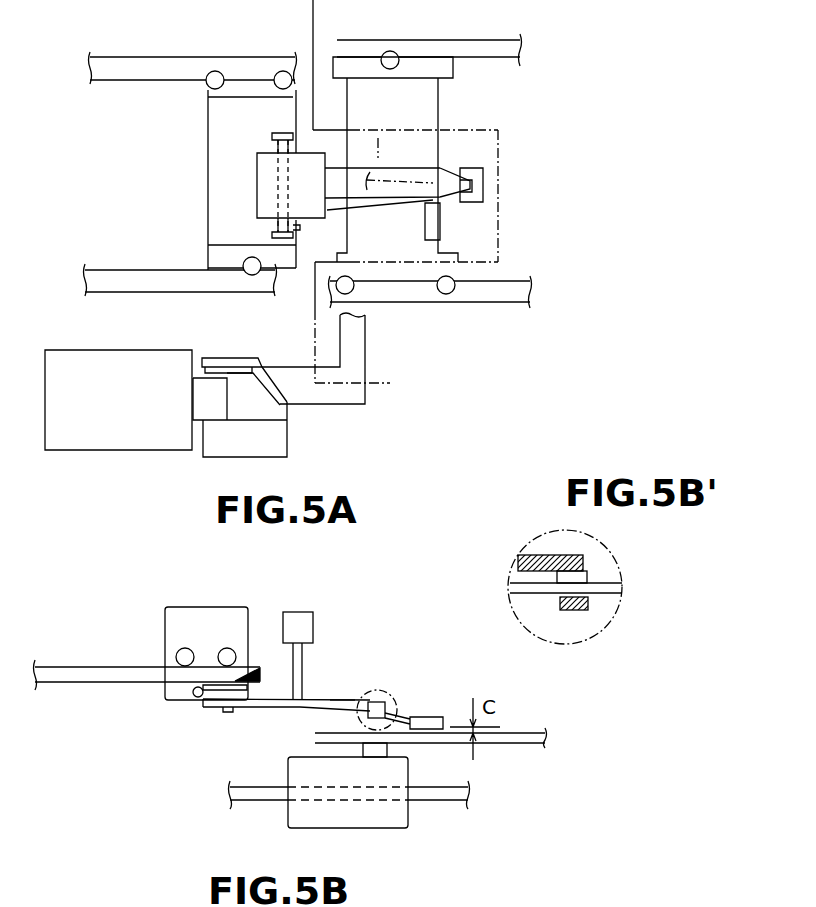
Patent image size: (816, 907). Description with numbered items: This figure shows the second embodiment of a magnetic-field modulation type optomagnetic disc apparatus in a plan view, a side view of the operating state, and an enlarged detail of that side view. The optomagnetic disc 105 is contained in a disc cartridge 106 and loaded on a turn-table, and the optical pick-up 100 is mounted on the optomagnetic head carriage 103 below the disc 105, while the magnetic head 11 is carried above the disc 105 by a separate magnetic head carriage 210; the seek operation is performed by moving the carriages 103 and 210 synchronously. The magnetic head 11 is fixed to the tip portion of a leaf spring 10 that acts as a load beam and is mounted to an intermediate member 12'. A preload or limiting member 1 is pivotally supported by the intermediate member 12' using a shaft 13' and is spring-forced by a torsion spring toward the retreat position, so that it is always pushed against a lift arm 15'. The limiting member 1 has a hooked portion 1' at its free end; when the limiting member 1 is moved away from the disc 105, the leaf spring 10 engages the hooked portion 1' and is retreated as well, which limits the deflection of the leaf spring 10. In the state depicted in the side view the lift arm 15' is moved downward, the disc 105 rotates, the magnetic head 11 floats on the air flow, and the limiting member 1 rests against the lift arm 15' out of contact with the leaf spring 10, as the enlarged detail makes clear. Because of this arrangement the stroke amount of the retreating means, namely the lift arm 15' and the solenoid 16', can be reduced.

In FIG. 5A, the disc cartridge 106 is at (312, 22).
In FIG. 5A, the magnetic head carriage 210 is at (222, 165).
In FIG. 5B, the magnetic head carriage 210 is at (208, 622).
In FIG. 5A, the intermediate member 12' is at (242, 187).
In FIG. 5B, the intermediate member 12' is at (264, 628).
In FIG. 5A, the shaft 13' is at (347, 237).
In FIG. 5B, the shaft 13' is at (201, 721).
In FIG. 5A, the optomagnetic head carriage 103 is at (432, 117).
In FIG. 5B, the optomagnetic head carriage 103 is at (408, 822).
In FIG. 5A, the leaf spring 10 is at (447, 188).
In FIG. 5B, the leaf spring 10 is at (313, 713).
In FIG. 5B', the leaf spring 10 is at (603, 582).
In FIG. 5A, the magnetic head 11 is at (487, 168).
In FIG. 5B, the magnetic head 11 is at (438, 713).
In FIG. 5A, the lift arm 15' is at (343, 358).
In FIG. 5B, the lift arm 15' is at (335, 684).
In FIG. 5B, the solenoid 16' is at (323, 648).
In FIG. 5B, the hooked portion 1' is at (383, 689).
In FIG. 5B', the hooked portion 1' is at (591, 634).
In FIG. 5B', the limiting member 1 is at (549, 548).
In FIG. 5B, the optomagnetic disc 105 is at (508, 733).
In FIG. 5B, the optical pick-up 100 is at (400, 750).